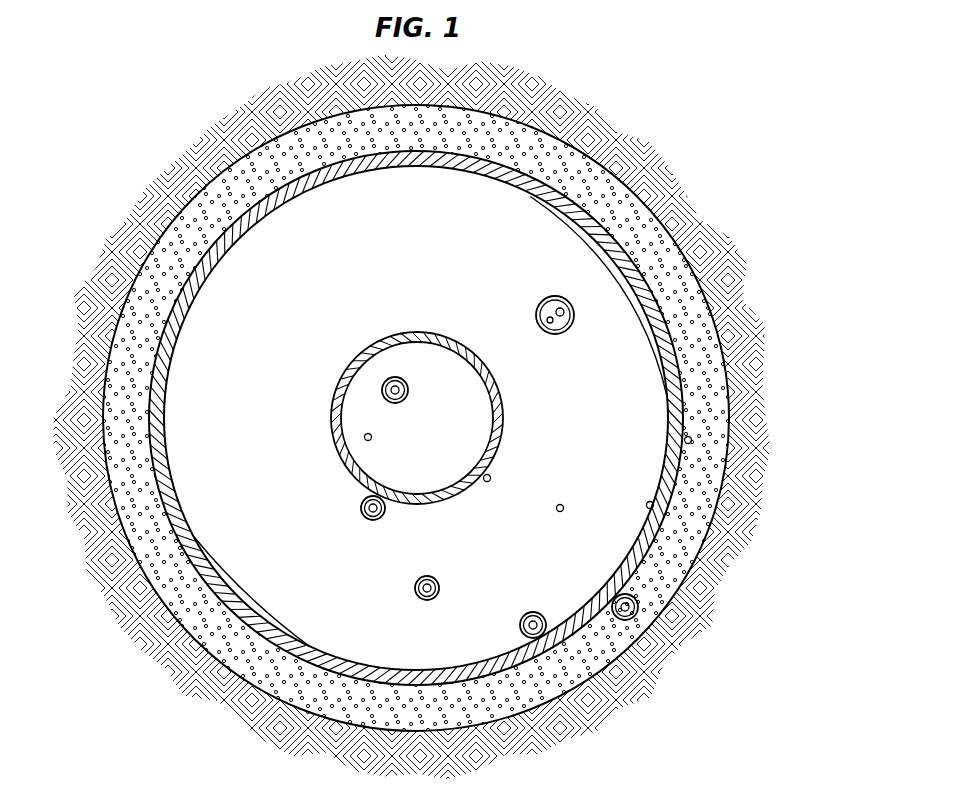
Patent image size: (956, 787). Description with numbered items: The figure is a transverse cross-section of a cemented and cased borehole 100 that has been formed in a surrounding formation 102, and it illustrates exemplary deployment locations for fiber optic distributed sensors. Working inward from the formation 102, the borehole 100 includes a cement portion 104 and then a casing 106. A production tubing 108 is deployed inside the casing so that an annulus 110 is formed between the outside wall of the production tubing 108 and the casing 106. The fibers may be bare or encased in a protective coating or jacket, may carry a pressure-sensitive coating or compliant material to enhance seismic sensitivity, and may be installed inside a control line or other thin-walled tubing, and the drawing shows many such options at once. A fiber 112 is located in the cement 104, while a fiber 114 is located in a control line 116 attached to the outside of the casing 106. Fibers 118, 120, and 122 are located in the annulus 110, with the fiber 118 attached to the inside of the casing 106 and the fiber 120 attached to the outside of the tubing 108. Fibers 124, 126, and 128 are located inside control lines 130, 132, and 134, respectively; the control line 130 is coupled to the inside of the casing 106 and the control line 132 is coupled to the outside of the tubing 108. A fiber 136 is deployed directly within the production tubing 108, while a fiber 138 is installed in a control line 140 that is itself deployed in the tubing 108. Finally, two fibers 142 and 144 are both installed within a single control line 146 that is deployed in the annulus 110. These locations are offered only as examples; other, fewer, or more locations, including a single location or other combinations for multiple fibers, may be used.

The borehole 100 is at (138, 289).
The formation 102 is at (83, 590).
The cement portion 104 is at (662, 248).
The casing 106 is at (677, 343).
The production tubing 108 is at (392, 338).
The annulus 110 is at (282, 240).
The fiber 112 is at (691, 442).
The fiber 114 is at (627, 612).
The control line 116 is at (637, 614).
The fiber 118 is at (647, 504).
The fiber 120 is at (488, 481).
The fiber 122 is at (559, 505).
The fiber 124 is at (538, 625).
The fiber 126 is at (370, 510).
The fiber 128 is at (423, 590).
The control line 130 is at (521, 626).
The control line 132 is at (365, 503).
The control line 134 is at (419, 585).
The fiber 136 is at (365, 439).
The fiber 138 is at (391, 391).
The control line 140 is at (385, 384).
The fiber 142 is at (550, 324).
The fiber 144 is at (560, 308).
The control line 146 is at (540, 304).